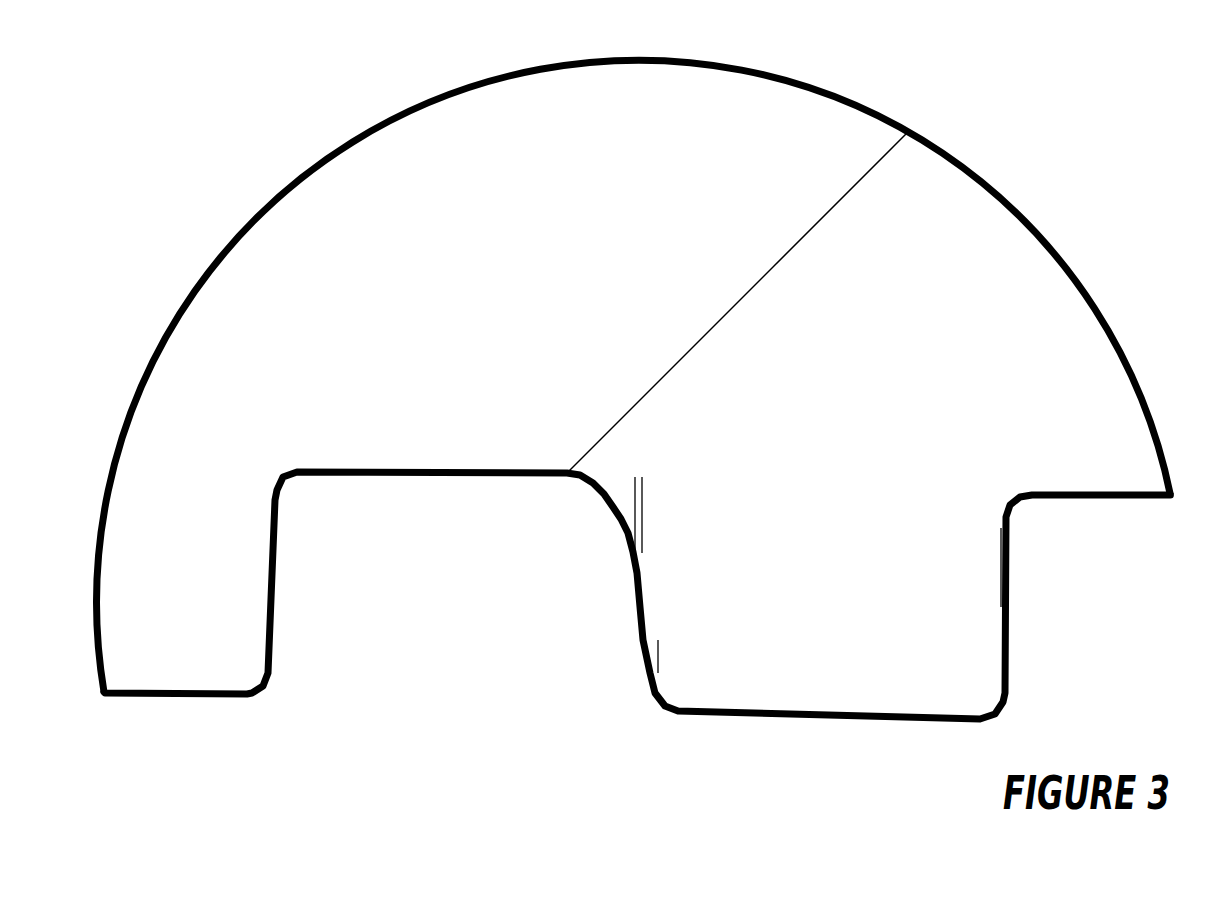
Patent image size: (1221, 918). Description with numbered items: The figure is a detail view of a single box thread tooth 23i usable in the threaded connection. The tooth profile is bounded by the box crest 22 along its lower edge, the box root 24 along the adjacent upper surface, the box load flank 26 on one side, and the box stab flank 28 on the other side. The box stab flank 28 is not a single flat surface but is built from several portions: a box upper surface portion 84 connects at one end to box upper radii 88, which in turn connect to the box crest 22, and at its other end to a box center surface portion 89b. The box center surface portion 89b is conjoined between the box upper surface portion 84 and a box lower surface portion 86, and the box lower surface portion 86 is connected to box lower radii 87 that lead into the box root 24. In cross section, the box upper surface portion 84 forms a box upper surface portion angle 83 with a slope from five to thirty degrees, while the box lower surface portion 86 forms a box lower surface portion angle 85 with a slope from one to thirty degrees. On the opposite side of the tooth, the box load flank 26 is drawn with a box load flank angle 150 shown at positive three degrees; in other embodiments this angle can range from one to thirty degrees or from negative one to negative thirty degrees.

The box crest 22 is at (829, 720).
The box thread tooth 23i is at (767, 777).
The box root 24 is at (440, 478).
The box load flank 26 is at (1012, 607).
The box stab flank 28 is at (562, 645).
The box upper surface portion angle 83 is at (677, 642).
The box upper surface portion 84 is at (648, 667).
The box lower surface portion angle 85 is at (610, 482).
The box lower surface portion 86 is at (637, 600).
The box lower radii 87 is at (608, 508).
The box upper radii 88 is at (670, 703).
The box center surface portion 89b is at (634, 630).
The box load flank angle 150 is at (970, 535).